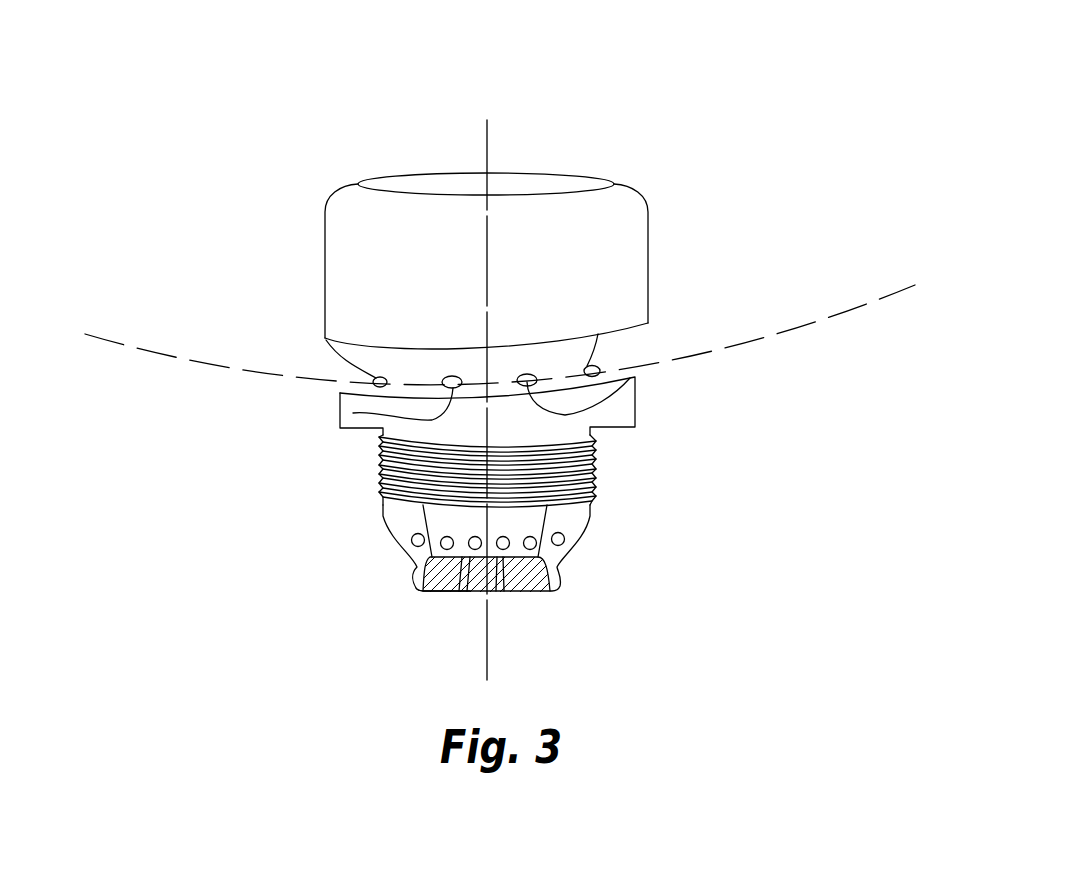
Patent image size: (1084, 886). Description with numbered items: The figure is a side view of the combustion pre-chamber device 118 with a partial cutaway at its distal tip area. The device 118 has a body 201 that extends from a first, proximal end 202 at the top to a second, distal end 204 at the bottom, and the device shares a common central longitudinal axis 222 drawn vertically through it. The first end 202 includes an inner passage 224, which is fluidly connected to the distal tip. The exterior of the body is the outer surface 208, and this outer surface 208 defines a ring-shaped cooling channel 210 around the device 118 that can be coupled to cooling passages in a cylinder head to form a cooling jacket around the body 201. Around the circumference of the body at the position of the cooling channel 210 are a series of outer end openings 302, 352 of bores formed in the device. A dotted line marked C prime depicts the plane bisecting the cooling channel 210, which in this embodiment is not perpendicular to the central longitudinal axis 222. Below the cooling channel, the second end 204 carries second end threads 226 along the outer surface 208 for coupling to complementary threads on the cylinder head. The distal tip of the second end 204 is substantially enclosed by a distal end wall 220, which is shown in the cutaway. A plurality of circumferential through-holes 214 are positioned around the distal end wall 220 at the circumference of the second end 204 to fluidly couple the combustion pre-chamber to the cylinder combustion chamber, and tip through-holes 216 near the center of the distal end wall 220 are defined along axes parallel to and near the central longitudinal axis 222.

The combustion pre-chamber device 118 is at (208, 168).
The first end 202 is at (630, 82).
The body 201 is at (652, 198).
The central longitudinal axis 222 is at (483, 137).
The inner passage 224 is at (505, 185).
The outer surface 208 is at (325, 336).
The cooling channel 210 is at (632, 355).
The outer end openings 302 is at (372, 382).
The outer end openings 352 is at (353, 413).
The second end threads 226 is at (603, 486).
The second end 204 is at (600, 605).
The circumferential through-holes 214 is at (575, 540).
The tip through-holes 216 is at (461, 592).
The distal end wall 220 is at (413, 592).